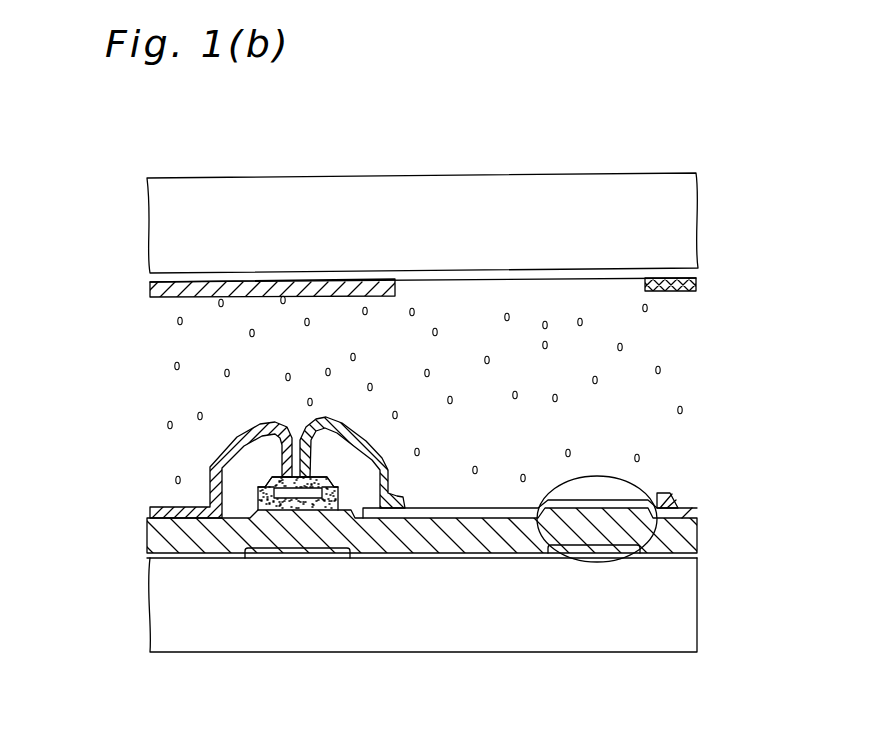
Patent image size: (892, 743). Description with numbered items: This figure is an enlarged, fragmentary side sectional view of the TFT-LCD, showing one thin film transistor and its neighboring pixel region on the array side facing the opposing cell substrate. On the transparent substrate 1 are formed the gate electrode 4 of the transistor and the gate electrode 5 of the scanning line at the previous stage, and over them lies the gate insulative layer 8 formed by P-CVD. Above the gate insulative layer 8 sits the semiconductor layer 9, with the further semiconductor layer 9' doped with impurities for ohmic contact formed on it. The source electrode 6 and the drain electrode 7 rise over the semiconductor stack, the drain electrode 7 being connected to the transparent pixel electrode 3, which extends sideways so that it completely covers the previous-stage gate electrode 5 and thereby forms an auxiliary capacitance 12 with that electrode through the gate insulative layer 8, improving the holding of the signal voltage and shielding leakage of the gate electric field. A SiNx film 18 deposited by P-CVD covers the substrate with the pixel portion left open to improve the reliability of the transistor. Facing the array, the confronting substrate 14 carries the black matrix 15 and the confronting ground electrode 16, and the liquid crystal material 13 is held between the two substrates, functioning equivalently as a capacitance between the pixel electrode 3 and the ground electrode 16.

The transparent substrate 1 is at (192, 615).
The pixel electrode 3 is at (472, 512).
The gate electrode 4 is at (293, 555).
The gate electrode at previous stage 5 is at (587, 552).
The source electrode 6 is at (233, 472).
The drain electrode 7 is at (338, 460).
The gate insulative layer 8 is at (670, 532).
The semiconductor layer 9 is at (216, 540).
The impurity-doped semiconductor layer 9' is at (218, 492).
The auxiliary capacitance 12 is at (617, 490).
The liquid crystal material 13 is at (661, 370).
The confronting substrate 14 is at (620, 208).
The black matrix 15 is at (150, 290).
The confronting ground electrode 16 is at (680, 292).
The SiNx layer 18 is at (683, 503).